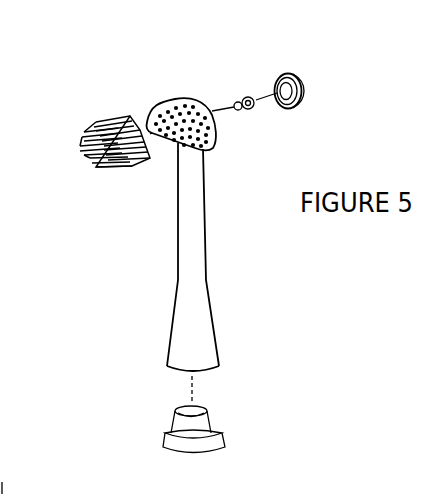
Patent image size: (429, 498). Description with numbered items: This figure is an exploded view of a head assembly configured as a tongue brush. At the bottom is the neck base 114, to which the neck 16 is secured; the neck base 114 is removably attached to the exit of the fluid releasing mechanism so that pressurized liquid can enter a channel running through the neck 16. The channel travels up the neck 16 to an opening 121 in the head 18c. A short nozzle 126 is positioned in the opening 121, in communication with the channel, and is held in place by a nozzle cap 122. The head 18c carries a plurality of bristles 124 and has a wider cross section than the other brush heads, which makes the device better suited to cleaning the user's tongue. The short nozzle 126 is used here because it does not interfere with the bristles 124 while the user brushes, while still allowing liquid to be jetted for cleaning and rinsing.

The head 18c is at (178, 98).
The short nozzle 126 is at (236, 101).
The nozzle cap 122 is at (282, 73).
The bristles 124 is at (78, 145).
The opening 121 is at (165, 150).
The neck 16 is at (185, 284).
The neck base 114 is at (173, 413).